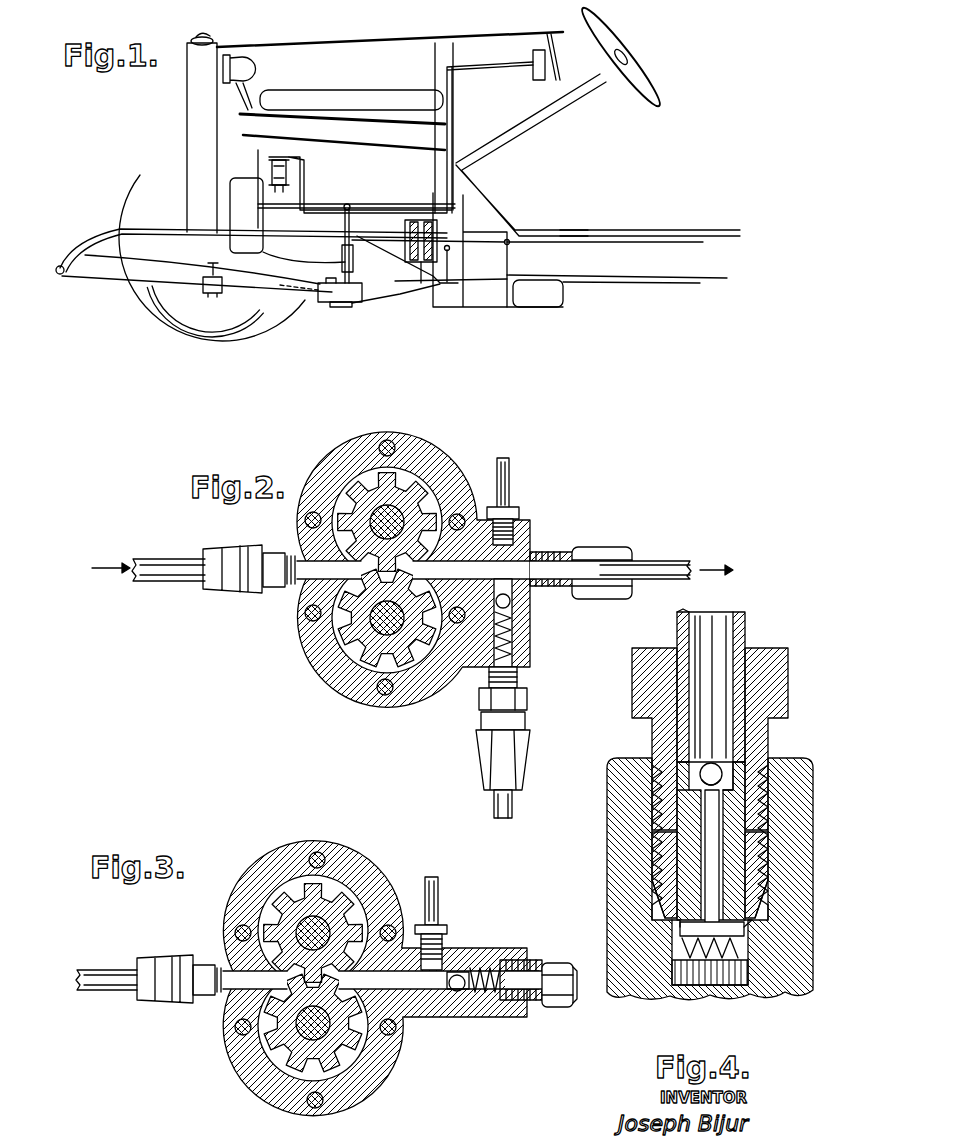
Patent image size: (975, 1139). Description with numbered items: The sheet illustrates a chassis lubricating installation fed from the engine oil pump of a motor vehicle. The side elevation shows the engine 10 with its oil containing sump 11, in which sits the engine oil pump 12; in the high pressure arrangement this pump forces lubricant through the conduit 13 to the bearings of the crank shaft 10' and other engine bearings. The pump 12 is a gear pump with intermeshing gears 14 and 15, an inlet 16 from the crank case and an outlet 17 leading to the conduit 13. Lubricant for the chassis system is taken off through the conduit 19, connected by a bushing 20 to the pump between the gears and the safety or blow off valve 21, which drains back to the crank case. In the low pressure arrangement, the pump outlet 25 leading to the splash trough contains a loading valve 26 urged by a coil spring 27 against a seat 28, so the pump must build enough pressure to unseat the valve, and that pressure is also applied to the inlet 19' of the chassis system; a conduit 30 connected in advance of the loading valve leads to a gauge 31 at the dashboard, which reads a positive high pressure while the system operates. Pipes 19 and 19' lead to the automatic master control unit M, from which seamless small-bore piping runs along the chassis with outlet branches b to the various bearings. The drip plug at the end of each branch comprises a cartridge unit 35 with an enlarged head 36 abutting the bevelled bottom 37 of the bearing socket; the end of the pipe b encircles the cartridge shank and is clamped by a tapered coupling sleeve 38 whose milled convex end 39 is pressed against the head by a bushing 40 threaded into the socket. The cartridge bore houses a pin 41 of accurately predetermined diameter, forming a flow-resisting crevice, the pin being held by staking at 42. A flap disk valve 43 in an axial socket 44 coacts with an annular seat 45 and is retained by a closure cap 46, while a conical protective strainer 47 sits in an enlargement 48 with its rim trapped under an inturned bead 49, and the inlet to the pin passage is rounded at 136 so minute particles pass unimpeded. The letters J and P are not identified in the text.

In FIG. 1, the engine 10 is at (351, 88).
In FIG. 1, the crank shaft 10' is at (420, 228).
In FIG. 1, the oil containing sump 11 is at (378, 298).
In FIG. 1, the engine oil pump 12 is at (330, 295).
In FIG. 2, the engine oil pump 12 is at (432, 450).
In FIG. 3, the engine oil pump 12 is at (298, 846).
In FIG. 1, the conduit 13 is at (407, 284).
In FIG. 2, the conduit 13 is at (636, 566).
In FIG. 2, the gear 14 is at (336, 644).
In FIG. 3, the gear 14 is at (275, 1052).
In FIG. 2, the gear 15 is at (372, 472).
In FIG. 3, the gear 15 is at (282, 920).
In FIG. 1, the inlet 16 is at (312, 288).
In FIG. 2, the inlet 16 is at (247, 591).
In FIG. 3, the inlet 16 is at (160, 1003).
In FIG. 2, the outlet 17 is at (533, 556).
In FIG. 1, the conduit 19 is at (319, 243).
In FIG. 2, the conduit 19 is at (523, 483).
In FIG. 3, the inlet 19' is at (432, 907).
In FIG. 2, the bushing 20 is at (519, 514).
In FIG. 2, the safety or blow off valve 21 is at (513, 621).
In FIG. 3, the pump outlet 25 is at (512, 958).
In FIG. 3, the loading valve 26 is at (459, 974).
In FIG. 3, the coil spring 27 is at (478, 968).
In FIG. 3, the seat 28 is at (462, 1001).
In FIG. 1, the conduit 30 is at (452, 98).
In FIG. 1, the gauge 31 is at (548, 65).
In FIG. 1, the cartridge unit 35 is at (84, 266).
In FIG. 4, the cartridge unit 35 is at (690, 872).
In FIG. 4, the enlarged head 36 is at (782, 988).
In FIG. 4, the bevelled bottom 37 is at (752, 975).
In FIG. 4, the tapered coupling sleeve 38 is at (660, 852).
In FIG. 4, the milled convex end 39 is at (665, 900).
In FIG. 4, the bushing 40 is at (758, 731).
In FIG. 4, the pin 41 is at (705, 808).
In FIG. 4, the staking 42 is at (684, 958).
In FIG. 4, the flap disk valve 43 is at (690, 943).
In FIG. 4, the axial socket 44 is at (700, 960).
In FIG. 4, the annular seat 45 is at (690, 930).
In FIG. 4, the closure cap 46 is at (728, 962).
In FIG. 4, the protective strainer 47 is at (714, 762).
In FIG. 4, the enlargement 48 is at (727, 774).
In FIG. 4, the inturned bead 49 is at (690, 746).
In FIG. 4, the rounded inlet 136 is at (682, 762).
In FIG. 1, the outlet branch b is at (492, 240).
In FIG. 4, the outlet branch b is at (746, 625).
In FIG. 1, the automatic master control unit M is at (292, 174).
In FIG. 1, the oil tank J is at (351, 85).
In FIG. 1, the oil pan P is at (462, 271).